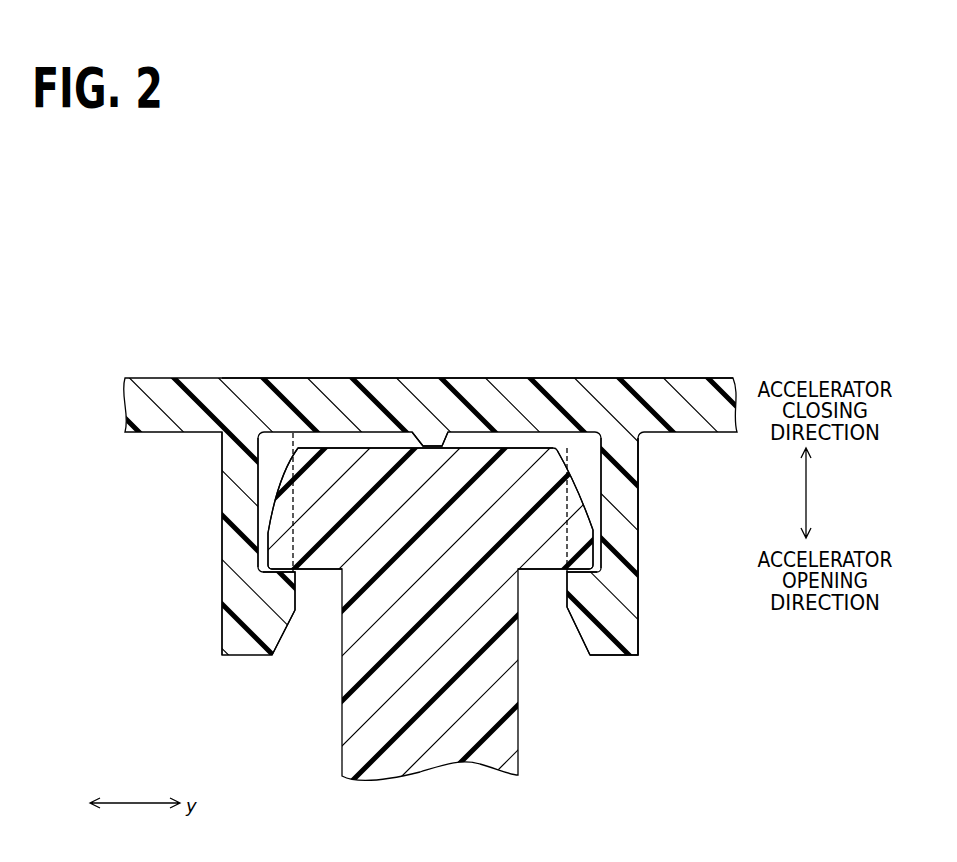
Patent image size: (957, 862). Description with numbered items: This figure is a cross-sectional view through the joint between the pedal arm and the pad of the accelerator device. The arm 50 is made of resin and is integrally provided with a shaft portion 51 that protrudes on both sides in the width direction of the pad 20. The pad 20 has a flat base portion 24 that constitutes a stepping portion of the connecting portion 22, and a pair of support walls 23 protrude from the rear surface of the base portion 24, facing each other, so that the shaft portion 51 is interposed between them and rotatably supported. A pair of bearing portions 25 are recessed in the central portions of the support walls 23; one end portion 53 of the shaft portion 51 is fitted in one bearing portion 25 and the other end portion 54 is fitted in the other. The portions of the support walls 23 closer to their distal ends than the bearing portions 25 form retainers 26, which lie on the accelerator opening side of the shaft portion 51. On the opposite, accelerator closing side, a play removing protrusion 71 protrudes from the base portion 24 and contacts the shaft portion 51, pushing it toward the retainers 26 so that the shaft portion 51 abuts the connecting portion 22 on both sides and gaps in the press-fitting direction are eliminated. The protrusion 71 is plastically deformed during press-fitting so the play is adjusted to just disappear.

The pad 20 is at (156, 378).
The connecting portion 22 is at (615, 657).
The support walls 23 is at (236, 532).
The base portion 24 is at (483, 395).
The bearing portions 25 is at (275, 564).
The retainers 26 is at (278, 586).
The arm 50 is at (340, 725).
The shaft portion 51 is at (372, 478).
The one end portion 53 is at (580, 521).
The other end portion 54 is at (283, 520).
The play removing protrusion 71 is at (430, 440).